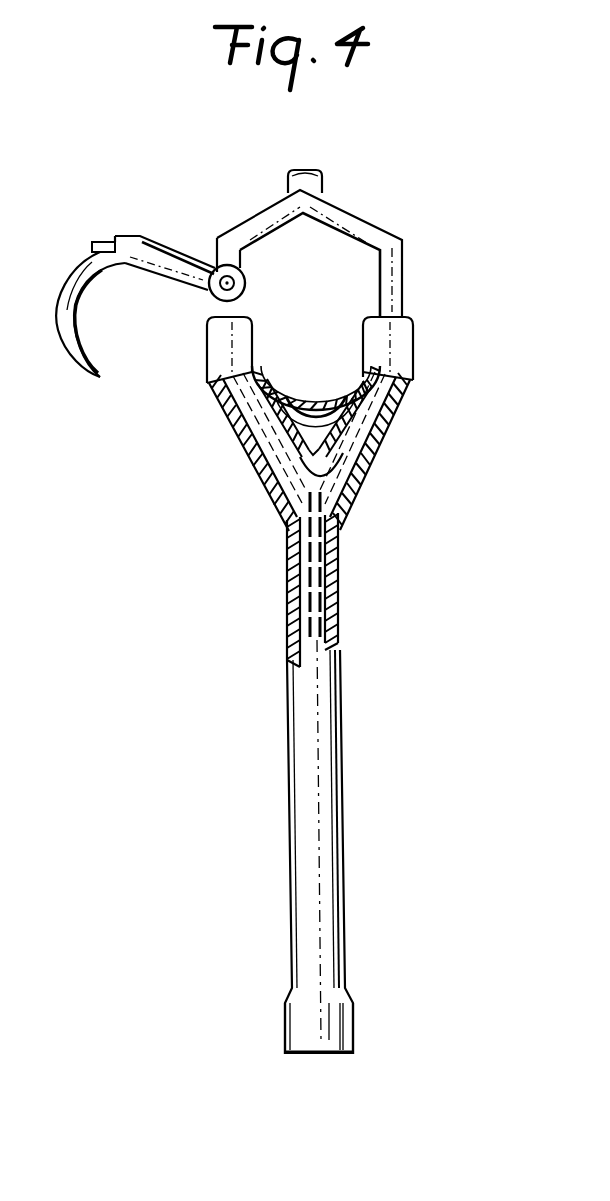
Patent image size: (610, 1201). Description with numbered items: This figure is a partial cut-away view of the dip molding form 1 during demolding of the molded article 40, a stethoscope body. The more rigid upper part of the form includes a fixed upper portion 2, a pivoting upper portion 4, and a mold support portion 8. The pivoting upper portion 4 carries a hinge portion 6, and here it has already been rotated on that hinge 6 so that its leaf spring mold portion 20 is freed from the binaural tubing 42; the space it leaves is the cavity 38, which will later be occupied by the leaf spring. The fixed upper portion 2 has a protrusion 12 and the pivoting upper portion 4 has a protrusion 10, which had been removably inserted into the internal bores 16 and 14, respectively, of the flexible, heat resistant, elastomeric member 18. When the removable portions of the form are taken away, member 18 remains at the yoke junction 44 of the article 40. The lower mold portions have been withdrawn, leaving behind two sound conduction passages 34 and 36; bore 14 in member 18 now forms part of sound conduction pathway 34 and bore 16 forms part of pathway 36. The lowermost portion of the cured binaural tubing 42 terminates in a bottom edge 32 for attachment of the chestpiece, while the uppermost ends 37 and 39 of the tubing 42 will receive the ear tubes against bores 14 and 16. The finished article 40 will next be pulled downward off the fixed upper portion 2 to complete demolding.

The molding form 1 is at (236, 568).
The fixed upper portion 2 is at (402, 285).
The pivoting upper portion 4 is at (175, 250).
The hinge portion 6 is at (207, 291).
The mold support portion 8 is at (290, 186).
The protrusion 10 is at (104, 241).
The protrusion 12 is at (380, 397).
The internal bore 14 is at (237, 443).
The internal bore 16 is at (360, 455).
The flexible, heat resistant member 18 is at (263, 473).
The leaf spring mold portion 20 is at (62, 325).
The bottom edge 32 is at (337, 1055).
The sound conduction passage 34 is at (297, 600).
The sound conduction passage 36 is at (320, 583).
The uppermost end 37 is at (233, 318).
The cavity 38 is at (314, 405).
The uppermost end 39 is at (390, 315).
The molded article 40 is at (348, 861).
The binaural tubing 42 is at (340, 780).
The yoke junction 44 is at (333, 452).